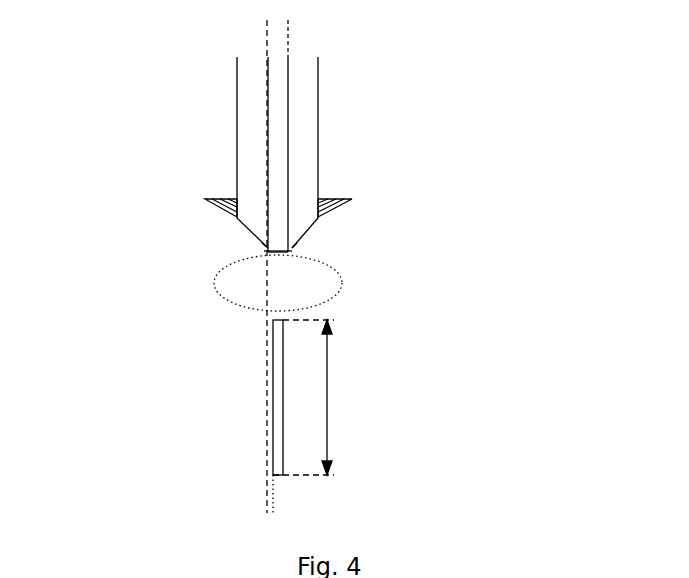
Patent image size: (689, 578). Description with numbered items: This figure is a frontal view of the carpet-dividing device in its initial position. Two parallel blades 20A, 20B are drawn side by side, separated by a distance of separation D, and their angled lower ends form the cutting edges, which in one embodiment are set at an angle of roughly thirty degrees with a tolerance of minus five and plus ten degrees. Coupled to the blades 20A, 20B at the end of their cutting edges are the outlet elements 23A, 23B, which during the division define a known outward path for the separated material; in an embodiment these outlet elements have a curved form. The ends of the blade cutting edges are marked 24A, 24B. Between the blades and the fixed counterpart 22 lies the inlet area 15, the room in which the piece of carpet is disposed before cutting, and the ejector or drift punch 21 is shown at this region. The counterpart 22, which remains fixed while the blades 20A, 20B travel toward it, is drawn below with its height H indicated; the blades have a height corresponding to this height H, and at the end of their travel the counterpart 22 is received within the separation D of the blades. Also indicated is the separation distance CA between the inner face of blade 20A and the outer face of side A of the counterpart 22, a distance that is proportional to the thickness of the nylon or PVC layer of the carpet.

The blade 20A is at (252, 132).
The blade 20B is at (307, 131).
The outlet element 23A is at (205, 199).
The outlet element 23B is at (352, 199).
The first outlet edge 24A is at (293, 246).
The second outlet edge 24B is at (294, 245).
The ejector or drift punch 21 is at (258, 248).
The inlet area 15 is at (342, 285).
The counterpart 22 is at (267, 375).
The separation distance CA is at (267, 513).
The separation distance D is at (273, 22).
The height H is at (318, 397).